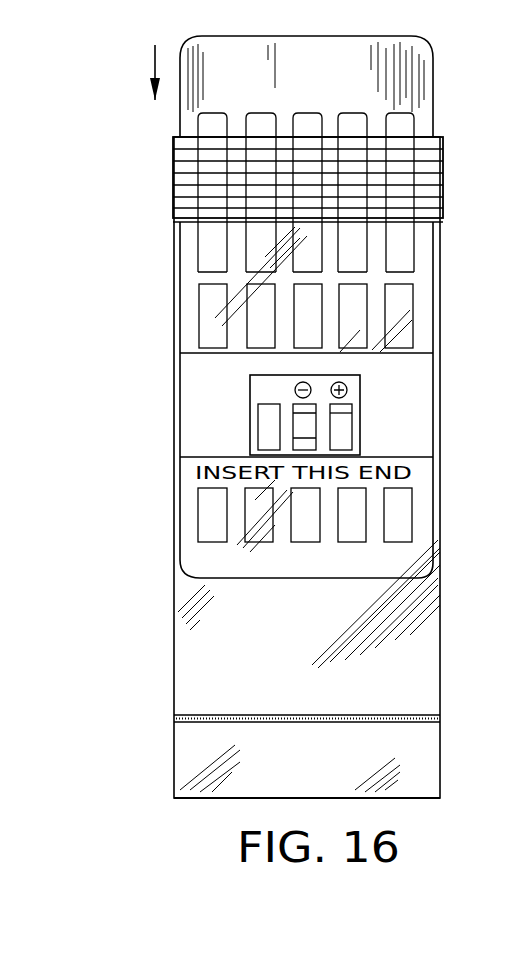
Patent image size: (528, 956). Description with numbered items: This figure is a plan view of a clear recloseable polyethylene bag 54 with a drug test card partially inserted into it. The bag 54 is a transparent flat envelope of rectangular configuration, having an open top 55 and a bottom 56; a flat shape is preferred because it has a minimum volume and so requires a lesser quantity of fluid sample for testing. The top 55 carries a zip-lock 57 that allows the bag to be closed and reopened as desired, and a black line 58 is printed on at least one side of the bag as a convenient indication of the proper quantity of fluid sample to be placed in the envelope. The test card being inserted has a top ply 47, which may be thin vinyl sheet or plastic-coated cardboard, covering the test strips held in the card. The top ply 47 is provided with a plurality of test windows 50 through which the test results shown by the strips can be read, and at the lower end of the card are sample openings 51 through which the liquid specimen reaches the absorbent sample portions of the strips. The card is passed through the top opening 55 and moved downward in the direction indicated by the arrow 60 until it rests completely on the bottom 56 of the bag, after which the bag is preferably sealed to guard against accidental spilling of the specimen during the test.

The top ply 47 is at (433, 52).
The test windows 50 is at (413, 325).
The sample openings 51 is at (408, 503).
The recloseable bag 54 is at (174, 430).
The top 55 is at (188, 128).
The bottom 56 is at (178, 798).
The zip-lock 57 is at (186, 224).
The black line 58 is at (188, 712).
The arrow 60 is at (155, 58).